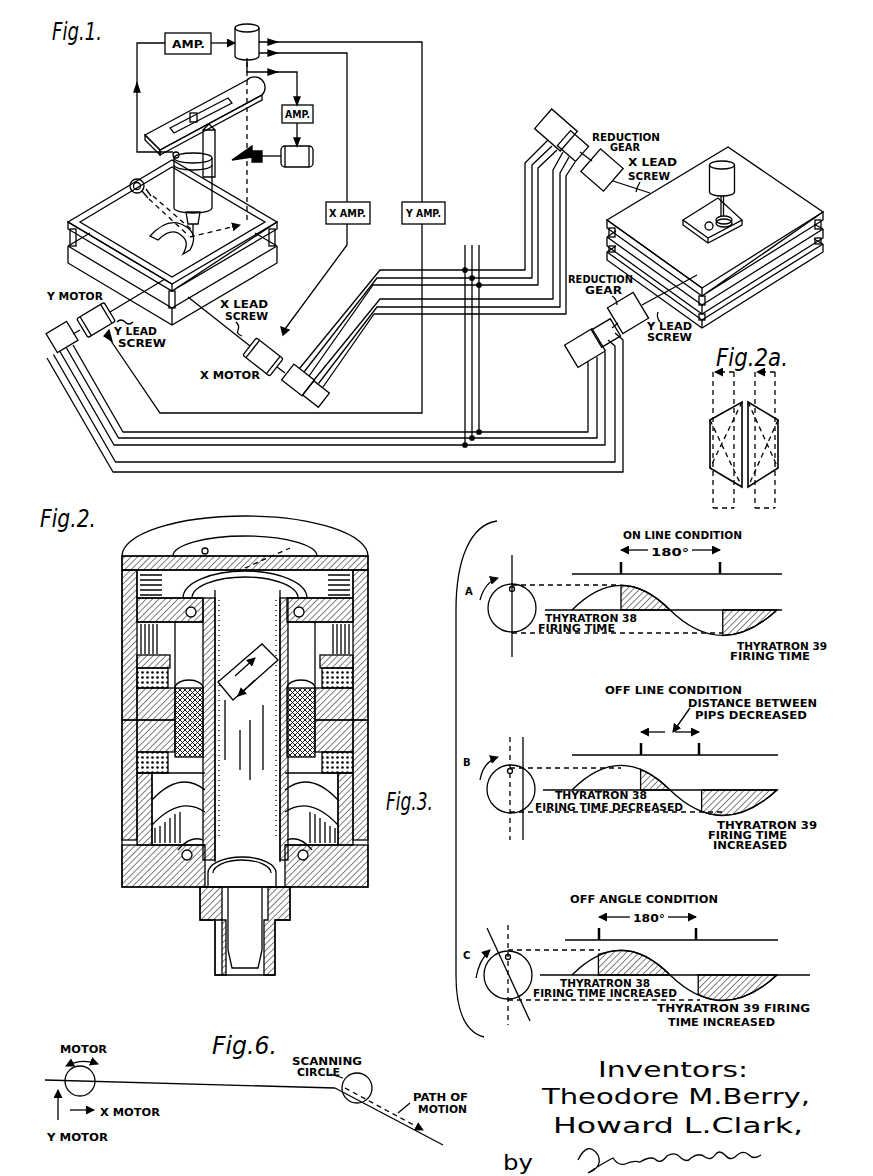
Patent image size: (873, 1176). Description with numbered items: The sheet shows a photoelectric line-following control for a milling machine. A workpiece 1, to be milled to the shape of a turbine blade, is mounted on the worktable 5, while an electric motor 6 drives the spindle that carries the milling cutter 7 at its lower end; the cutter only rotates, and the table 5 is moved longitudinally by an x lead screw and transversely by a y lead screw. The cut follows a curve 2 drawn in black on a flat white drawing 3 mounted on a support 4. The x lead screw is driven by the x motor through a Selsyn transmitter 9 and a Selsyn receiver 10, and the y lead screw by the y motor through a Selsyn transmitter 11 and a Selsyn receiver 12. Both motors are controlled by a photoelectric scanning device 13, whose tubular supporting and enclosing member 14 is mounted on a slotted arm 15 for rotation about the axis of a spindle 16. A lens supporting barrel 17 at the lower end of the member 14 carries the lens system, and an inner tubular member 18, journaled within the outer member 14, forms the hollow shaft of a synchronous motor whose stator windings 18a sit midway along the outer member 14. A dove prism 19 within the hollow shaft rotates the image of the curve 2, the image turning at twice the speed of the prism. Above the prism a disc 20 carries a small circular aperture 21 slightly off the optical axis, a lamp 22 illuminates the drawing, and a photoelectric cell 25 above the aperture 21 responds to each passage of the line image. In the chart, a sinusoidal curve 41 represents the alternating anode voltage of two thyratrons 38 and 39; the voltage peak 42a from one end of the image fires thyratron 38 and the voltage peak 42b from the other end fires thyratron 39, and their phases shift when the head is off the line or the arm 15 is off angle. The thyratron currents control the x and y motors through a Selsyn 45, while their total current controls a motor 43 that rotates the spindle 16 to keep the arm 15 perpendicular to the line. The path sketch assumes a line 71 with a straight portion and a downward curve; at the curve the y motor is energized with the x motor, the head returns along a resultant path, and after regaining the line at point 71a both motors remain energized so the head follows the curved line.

In FIG. 1, the workpiece 1 is at (706, 216).
In FIG. 1, the curve 2 is at (164, 235).
In FIG. 1, the drawing 3 is at (110, 192).
In FIG. 1, the support 4 is at (86, 203).
In FIG. 1, the worktable 5 is at (786, 183).
In FIG. 1, the electric motor 6 is at (735, 179).
In FIG. 1, the milling cutter 7 is at (738, 214).
In FIG. 1, the Selsyn transmitter 9 is at (286, 390).
In FIG. 1, the Selsyn receiver 10 is at (570, 121).
In FIG. 1, the Selsyn transmitter 11 is at (55, 326).
In FIG. 1, the Selsyn receiver 12 is at (568, 350).
In FIG. 1, the photoelectric scanning device 13 is at (213, 180).
In FIG. 2, the photoelectric scanning device 13 is at (367, 720).
In FIG. 1, the tubular supporting and enclosing member 14 is at (213, 190).
In FIG. 2, the tubular supporting and enclosing member 14 is at (367, 753).
In FIG. 1, the slotted arm 15 is at (222, 88).
In FIG. 1, the spindle 16 is at (249, 127).
In FIG. 1, the lens supporting barrel 17 is at (200, 216).
In FIG. 2, the lens supporting barrel 17 is at (290, 910).
In FIG. 2, the inner tubular member 18 is at (291, 715).
In FIG. 2, the stator windings 18a is at (137, 765).
In FIG. 2A, the dove prism 19 is at (709, 440).
In FIG. 2, the dove prism 19 is at (248, 712).
In FIG. 1, the disc 20 is at (188, 166).
In FIG. 2, the disc 20 is at (260, 542).
In FIG. 3, the disc 20 is at (489, 610).
In FIG. 1, the circular aperture 21 is at (172, 155).
In FIG. 2, the circular aperture 21 is at (203, 548).
In FIG. 3, the circular aperture 21 is at (515, 586).
In FIG. 1, the lamp 22 is at (133, 192).
In FIG. 1, the photoelectric cell 25 is at (212, 143).
In FIG. 3, the thyratron 38 is at (648, 983).
In FIG. 3, the thyratron 39 is at (760, 625).
In FIG. 3, the sinusoidal curve 41 is at (585, 596).
In FIG. 3, the voltage peak 42a is at (618, 566).
In FIG. 3, the voltage peak 42b is at (723, 566).
In FIG. 1, the motor 43 is at (297, 167).
In FIG. 6, the motor 43 is at (98, 1066).
In FIG. 1, the Selsyn 45 is at (259, 31).
In FIG. 6, the line 71 is at (187, 1083).
In FIG. 6, the point 71a is at (420, 1139).